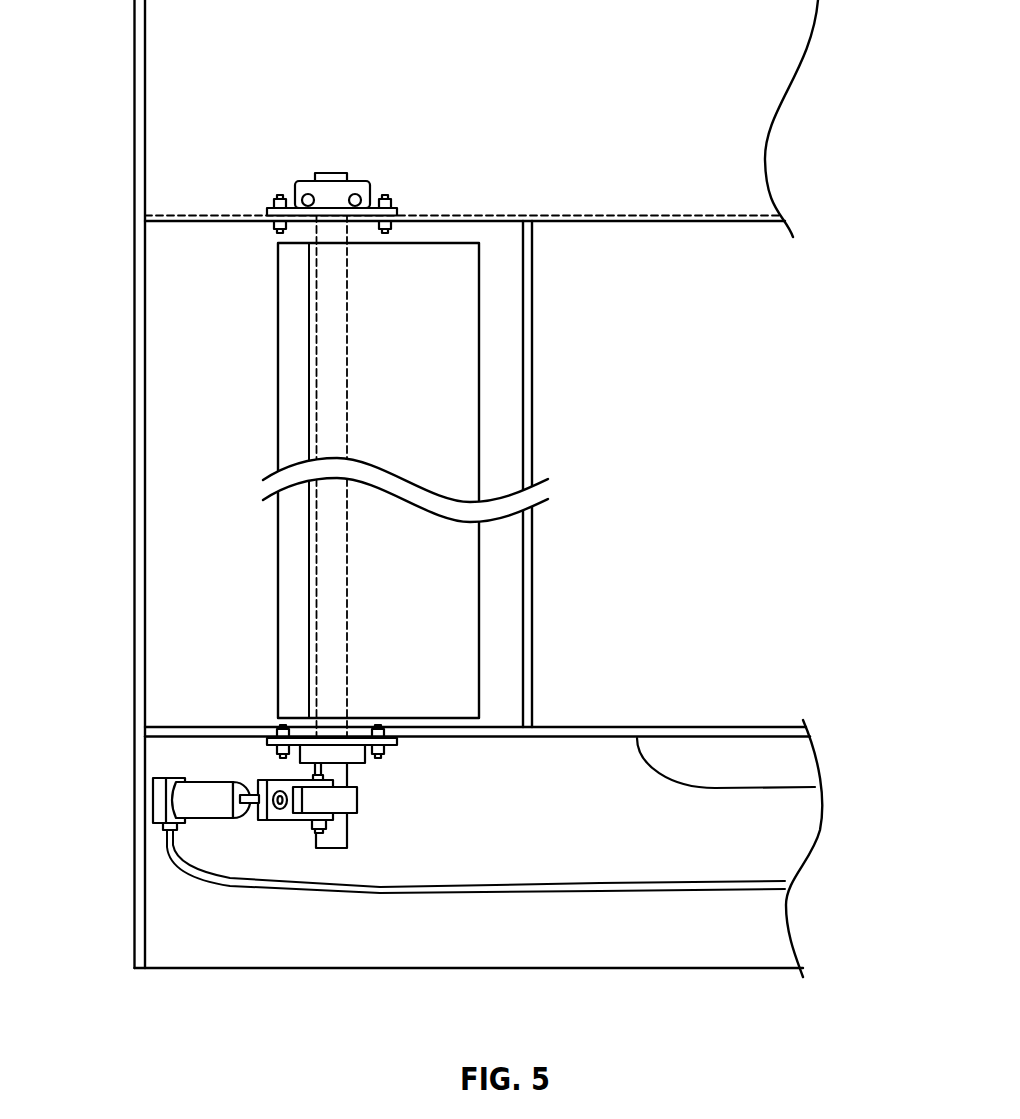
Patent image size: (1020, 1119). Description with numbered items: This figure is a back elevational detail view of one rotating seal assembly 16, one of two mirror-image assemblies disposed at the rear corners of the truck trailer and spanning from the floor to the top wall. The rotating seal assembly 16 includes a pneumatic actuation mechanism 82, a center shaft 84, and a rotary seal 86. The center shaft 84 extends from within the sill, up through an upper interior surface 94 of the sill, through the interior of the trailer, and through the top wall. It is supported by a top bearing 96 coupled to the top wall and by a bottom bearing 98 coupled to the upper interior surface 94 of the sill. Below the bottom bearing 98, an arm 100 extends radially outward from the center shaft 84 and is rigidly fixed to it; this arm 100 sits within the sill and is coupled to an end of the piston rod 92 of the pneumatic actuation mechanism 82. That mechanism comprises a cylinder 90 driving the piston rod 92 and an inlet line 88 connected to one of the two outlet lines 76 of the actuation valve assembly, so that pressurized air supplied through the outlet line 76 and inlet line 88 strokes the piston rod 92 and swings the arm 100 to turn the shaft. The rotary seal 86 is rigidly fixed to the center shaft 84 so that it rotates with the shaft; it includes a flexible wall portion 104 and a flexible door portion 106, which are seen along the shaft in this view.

The rotating seal assembly 16 is at (845, 192).
The outlet line 76 is at (755, 925).
The pneumatic actuation mechanism 82 is at (108, 790).
The center shaft 84 is at (316, 403).
The rotary seal 86 is at (495, 443).
The inlet line 88 is at (265, 888).
The cylinder 90 is at (212, 818).
The piston rod 92 is at (255, 813).
The upper interior surface 94 is at (815, 787).
The top bearing 96 is at (300, 185).
The bottom bearing 98 is at (355, 758).
The arm 100 is at (278, 822).
The flexible wall portion 104 is at (289, 307).
The flexible door portion 106 is at (442, 273).